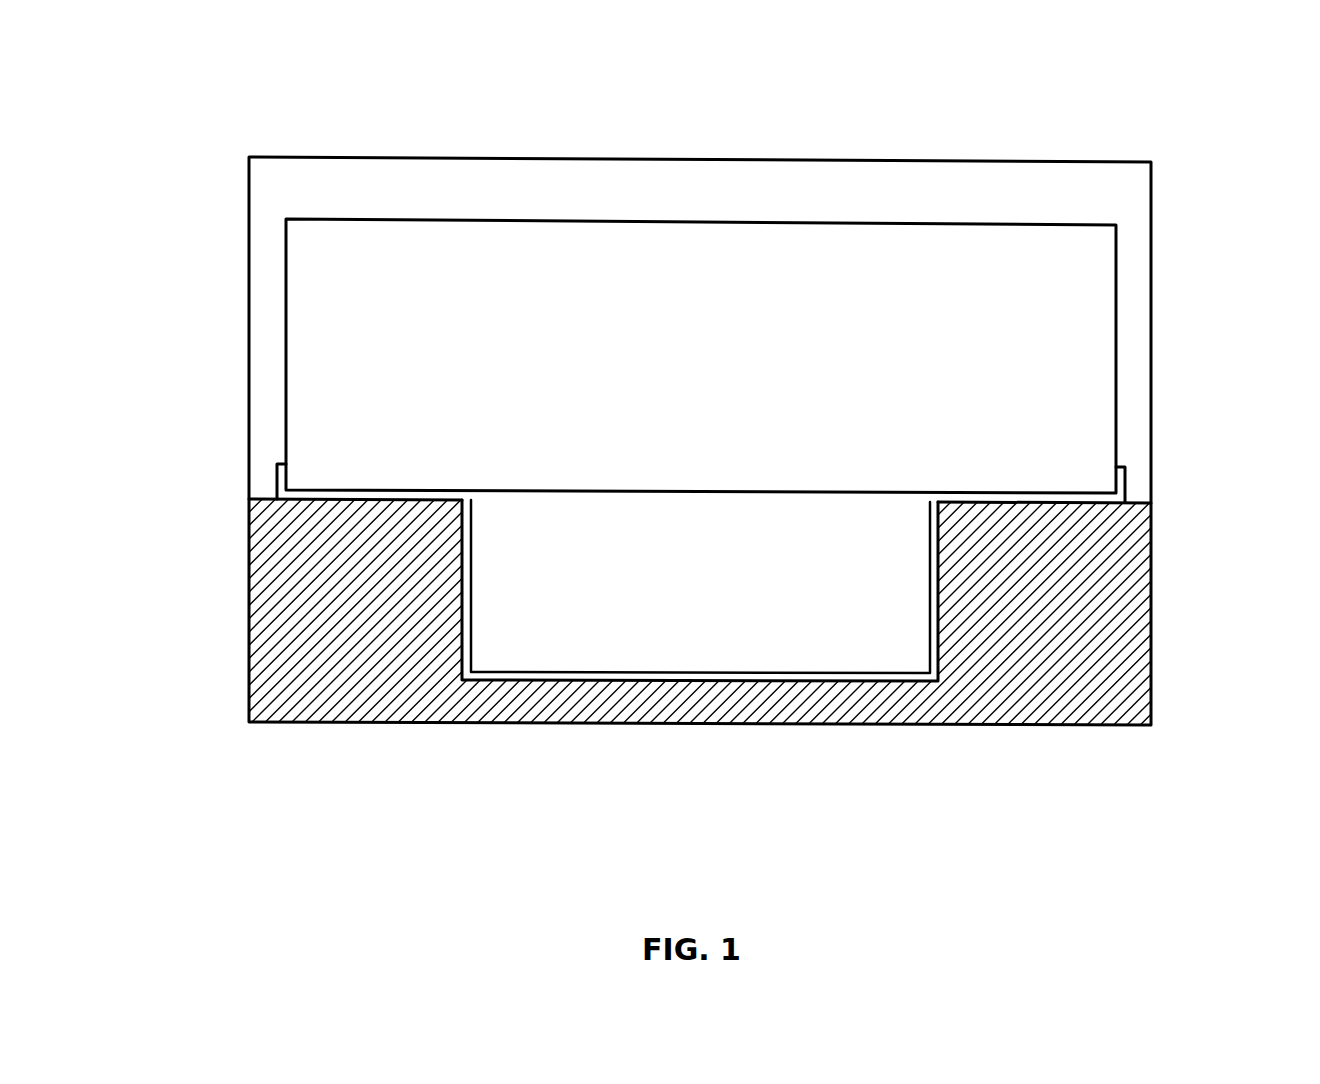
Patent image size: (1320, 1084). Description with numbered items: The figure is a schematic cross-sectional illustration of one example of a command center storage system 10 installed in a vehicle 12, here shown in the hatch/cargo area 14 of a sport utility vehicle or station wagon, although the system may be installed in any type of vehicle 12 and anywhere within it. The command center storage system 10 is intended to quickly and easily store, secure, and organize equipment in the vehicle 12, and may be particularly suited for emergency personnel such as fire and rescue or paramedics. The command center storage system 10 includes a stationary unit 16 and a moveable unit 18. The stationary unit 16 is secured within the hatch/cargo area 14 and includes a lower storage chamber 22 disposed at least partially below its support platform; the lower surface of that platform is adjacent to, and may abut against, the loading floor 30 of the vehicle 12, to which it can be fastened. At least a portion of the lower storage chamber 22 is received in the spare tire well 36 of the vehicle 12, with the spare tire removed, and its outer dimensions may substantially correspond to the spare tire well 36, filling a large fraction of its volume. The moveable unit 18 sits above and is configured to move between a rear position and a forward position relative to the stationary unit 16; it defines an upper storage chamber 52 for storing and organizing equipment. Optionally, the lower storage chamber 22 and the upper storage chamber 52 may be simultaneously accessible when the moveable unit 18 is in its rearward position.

The command center storage system 10 is at (372, 197).
The vehicle 12 is at (1156, 247).
The hatch/cargo area 14 is at (797, 203).
The stationary unit 16 is at (710, 577).
The moveable unit 18 is at (283, 338).
The lower storage chamber 22 is at (748, 640).
The loading floor 30 is at (1135, 505).
The spare tire well 36 is at (943, 607).
The upper storage chamber 52 is at (848, 388).